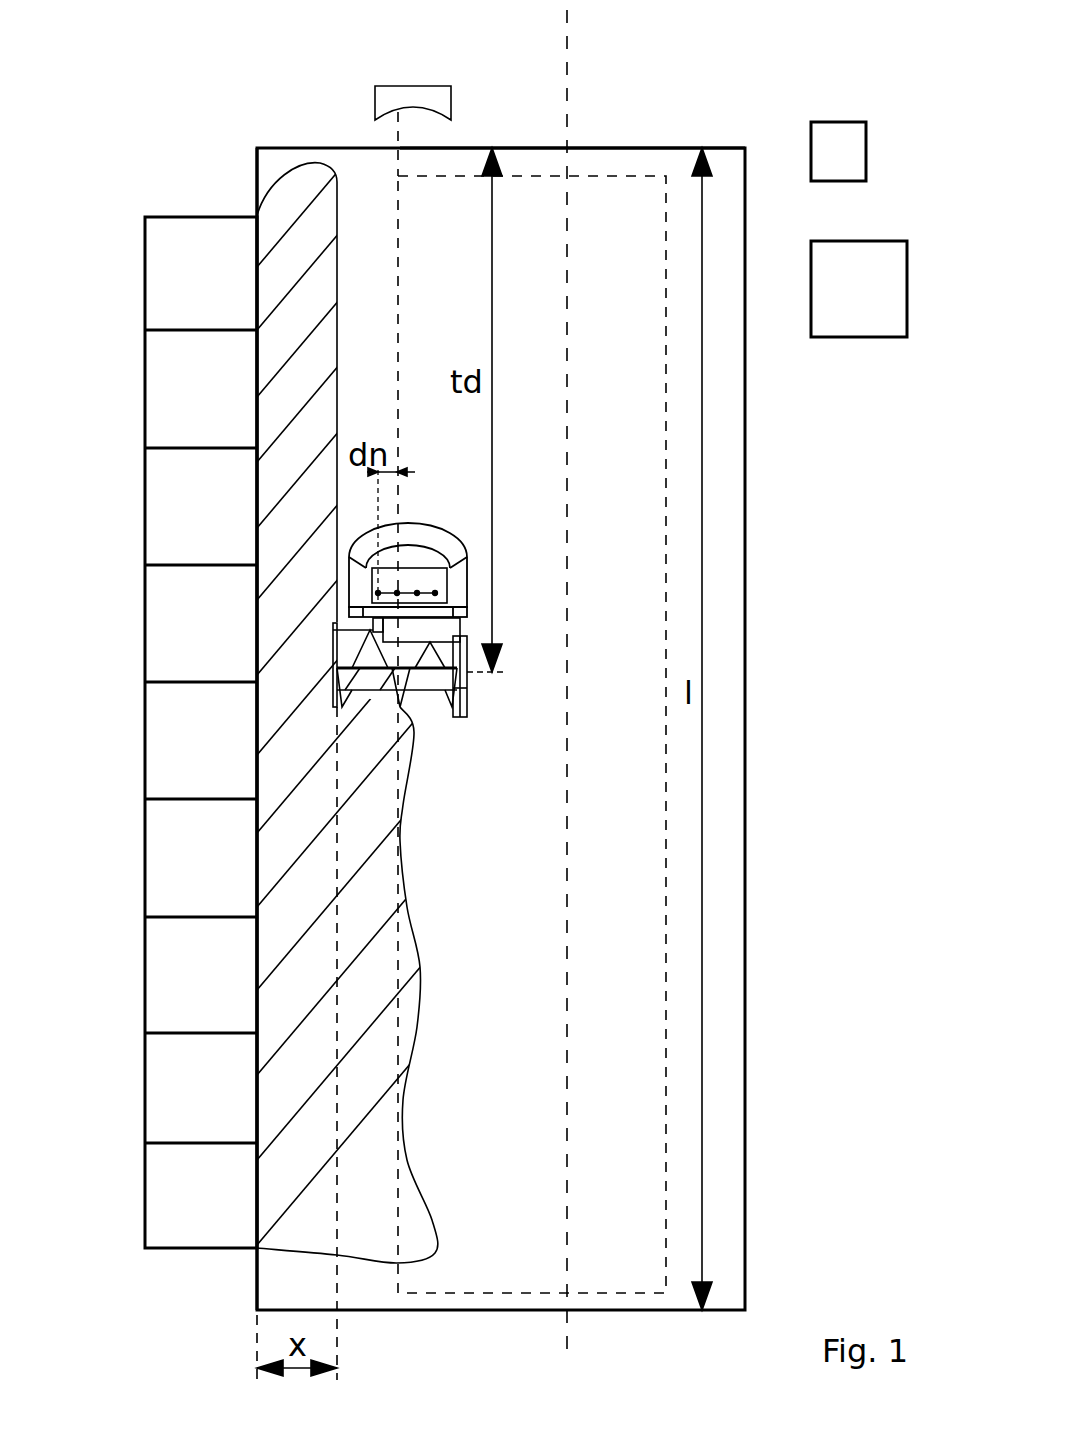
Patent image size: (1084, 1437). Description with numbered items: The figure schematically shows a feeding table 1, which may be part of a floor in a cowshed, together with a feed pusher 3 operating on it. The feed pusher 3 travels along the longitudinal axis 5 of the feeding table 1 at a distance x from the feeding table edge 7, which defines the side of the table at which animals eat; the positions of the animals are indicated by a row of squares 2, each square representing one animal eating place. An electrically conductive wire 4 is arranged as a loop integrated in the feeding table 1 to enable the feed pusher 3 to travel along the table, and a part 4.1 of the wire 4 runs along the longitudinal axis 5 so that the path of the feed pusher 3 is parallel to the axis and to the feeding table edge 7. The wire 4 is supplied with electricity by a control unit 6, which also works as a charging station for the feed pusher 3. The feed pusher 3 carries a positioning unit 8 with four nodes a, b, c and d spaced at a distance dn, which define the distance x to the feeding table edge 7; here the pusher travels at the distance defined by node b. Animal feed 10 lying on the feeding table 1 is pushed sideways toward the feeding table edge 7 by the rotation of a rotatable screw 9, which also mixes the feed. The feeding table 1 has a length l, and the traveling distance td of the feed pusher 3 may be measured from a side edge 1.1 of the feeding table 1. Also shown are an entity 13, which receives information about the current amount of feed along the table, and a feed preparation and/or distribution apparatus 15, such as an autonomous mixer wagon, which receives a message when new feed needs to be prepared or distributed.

The feeding table 1 is at (535, 850).
The side edge 1.1 is at (506, 148).
The row of squares 2 is at (122, 950).
The feed pusher 3 is at (411, 523).
The electrically conductive wire 4 is at (666, 806).
The part of the wire 4.1 is at (397, 1025).
The longitudinal axis 5 is at (567, 46).
The control unit 6 is at (437, 98).
The feeding table edge 7 is at (257, 178).
The positioning unit 8 is at (425, 572).
The rotatable screw 9 is at (408, 678).
The animal feed 10 is at (326, 455).
The entity 13 is at (857, 152).
The feed preparation and/or distribution apparatus 15 is at (855, 258).